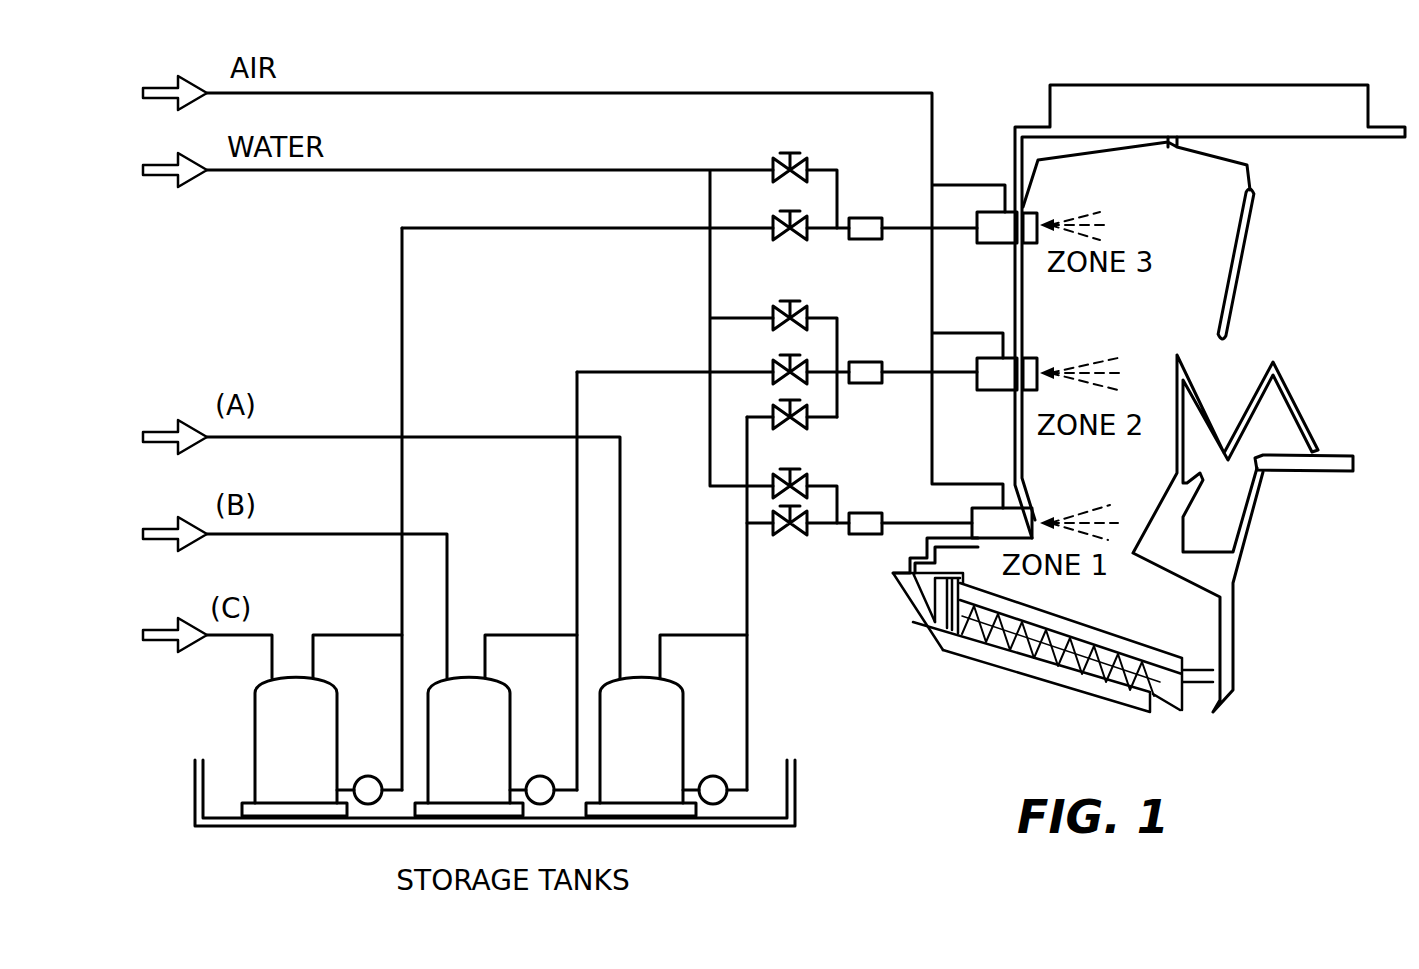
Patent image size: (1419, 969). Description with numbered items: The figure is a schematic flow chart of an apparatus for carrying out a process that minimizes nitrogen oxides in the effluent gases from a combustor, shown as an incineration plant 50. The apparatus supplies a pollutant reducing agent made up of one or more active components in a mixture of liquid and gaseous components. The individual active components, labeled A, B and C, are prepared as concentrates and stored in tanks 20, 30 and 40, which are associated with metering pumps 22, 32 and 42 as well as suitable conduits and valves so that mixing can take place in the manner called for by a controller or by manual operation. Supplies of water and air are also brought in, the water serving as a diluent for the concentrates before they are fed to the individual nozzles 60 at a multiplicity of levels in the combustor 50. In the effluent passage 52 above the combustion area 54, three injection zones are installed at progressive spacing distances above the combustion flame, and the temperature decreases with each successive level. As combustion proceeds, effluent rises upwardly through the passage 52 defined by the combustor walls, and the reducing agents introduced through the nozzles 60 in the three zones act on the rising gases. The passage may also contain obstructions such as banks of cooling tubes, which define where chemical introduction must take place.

The tank 20 is at (294, 746).
The tank 30 is at (469, 746).
The tank 40 is at (641, 746).
The metering pump 22 is at (373, 797).
The metering pump 32 is at (545, 797).
The metering pump 42 is at (713, 797).
The incineration plant 50 is at (1272, 275).
The effluent passage 52 is at (1138, 238).
The combustion area 54 is at (1153, 603).
The nozzle 60 is at (998, 222).